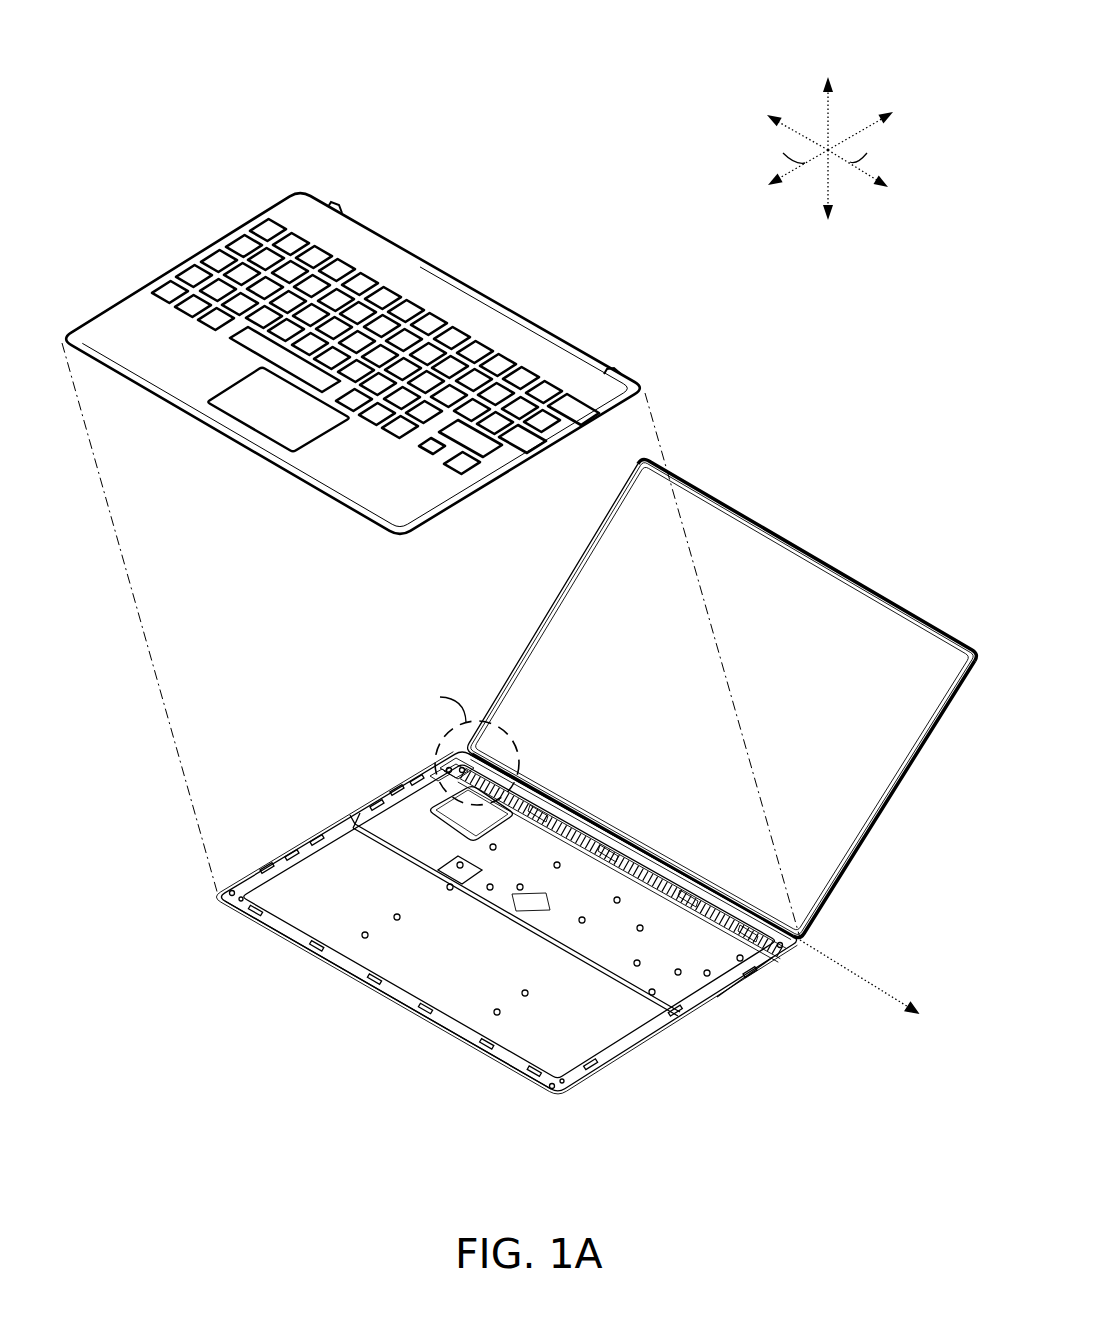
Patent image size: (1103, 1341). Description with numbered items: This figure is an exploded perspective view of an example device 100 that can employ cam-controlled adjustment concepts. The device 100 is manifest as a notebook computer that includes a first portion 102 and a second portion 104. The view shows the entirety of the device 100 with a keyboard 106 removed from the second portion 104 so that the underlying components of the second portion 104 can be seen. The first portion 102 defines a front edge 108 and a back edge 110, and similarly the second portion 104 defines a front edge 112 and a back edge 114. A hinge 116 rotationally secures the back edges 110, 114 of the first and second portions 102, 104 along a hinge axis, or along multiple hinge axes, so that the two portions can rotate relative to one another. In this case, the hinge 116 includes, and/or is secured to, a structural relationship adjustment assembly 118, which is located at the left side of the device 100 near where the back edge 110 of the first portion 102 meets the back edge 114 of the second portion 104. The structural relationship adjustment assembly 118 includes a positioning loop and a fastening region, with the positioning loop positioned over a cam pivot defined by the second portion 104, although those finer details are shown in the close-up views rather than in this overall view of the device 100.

The device 100 is at (215, 44).
The first portion 102 is at (780, 484).
The second portion 104 is at (314, 966).
The keyboard 106 is at (282, 212).
The front edge 108 is at (827, 560).
The back edge 110 is at (808, 937).
The front edge 112 is at (503, 1068).
The back edge 114 is at (798, 952).
The hinge 116 is at (492, 800).
The structural relationship adjustment assembly 118 is at (448, 758).